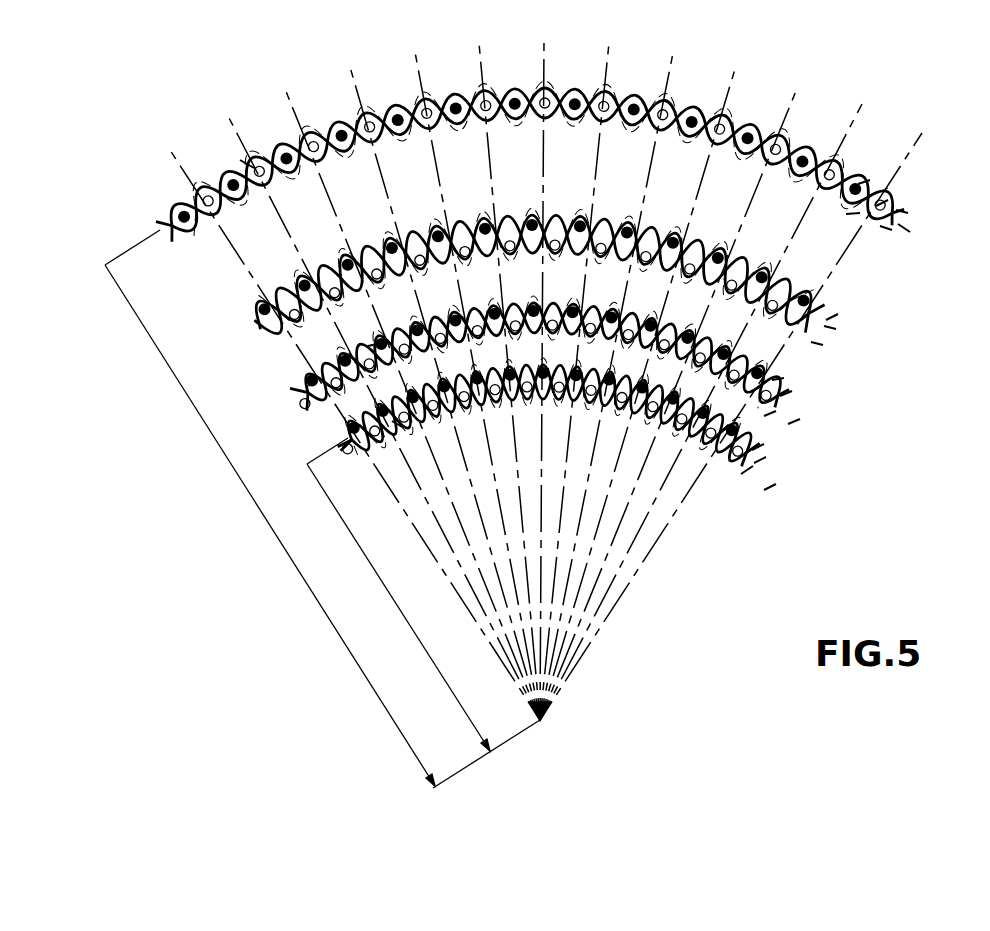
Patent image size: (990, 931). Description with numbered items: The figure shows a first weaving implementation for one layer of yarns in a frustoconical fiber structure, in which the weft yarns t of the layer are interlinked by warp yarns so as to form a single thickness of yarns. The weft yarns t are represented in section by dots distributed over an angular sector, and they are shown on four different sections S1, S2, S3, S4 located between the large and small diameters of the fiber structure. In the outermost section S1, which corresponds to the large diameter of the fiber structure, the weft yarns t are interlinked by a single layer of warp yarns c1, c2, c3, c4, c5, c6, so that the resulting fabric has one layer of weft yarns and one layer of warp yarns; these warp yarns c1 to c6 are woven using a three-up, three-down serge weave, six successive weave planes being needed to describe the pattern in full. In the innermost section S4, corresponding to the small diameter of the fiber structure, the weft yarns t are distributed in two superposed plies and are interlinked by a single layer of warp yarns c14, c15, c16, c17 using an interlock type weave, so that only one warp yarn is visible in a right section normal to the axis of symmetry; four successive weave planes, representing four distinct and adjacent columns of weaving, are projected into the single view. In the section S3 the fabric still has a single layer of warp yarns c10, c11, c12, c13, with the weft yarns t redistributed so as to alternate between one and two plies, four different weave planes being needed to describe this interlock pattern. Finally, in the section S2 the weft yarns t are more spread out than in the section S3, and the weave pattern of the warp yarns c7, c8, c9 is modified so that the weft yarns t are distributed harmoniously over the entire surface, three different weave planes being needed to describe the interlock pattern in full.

The section S1 is at (514, 162).
The section S2 is at (512, 288).
The section S3 is at (518, 368).
The section S4 is at (519, 425).
The weft yarns t is at (247, 159).
The warp yarn c1 is at (863, 181).
The warp yarn c2 is at (880, 203).
The warp yarn c3 is at (903, 207).
The warp yarn c4 is at (905, 228).
The warp yarn c5 is at (887, 226).
The warp yarn c6 is at (852, 213).
The warp yarn c7 is at (835, 315).
The warp yarn c8 is at (818, 342).
The warp yarn c9 is at (832, 326).
The warp yarn c10 is at (787, 392).
The warp yarn c11 is at (780, 378).
The warp yarn c12 is at (795, 420).
The warp yarn c13 is at (770, 412).
The warp yarn c14 is at (758, 446).
The warp yarn c15 is at (760, 459).
The warp yarn c16 is at (770, 486).
The warp yarn c17 is at (747, 469).